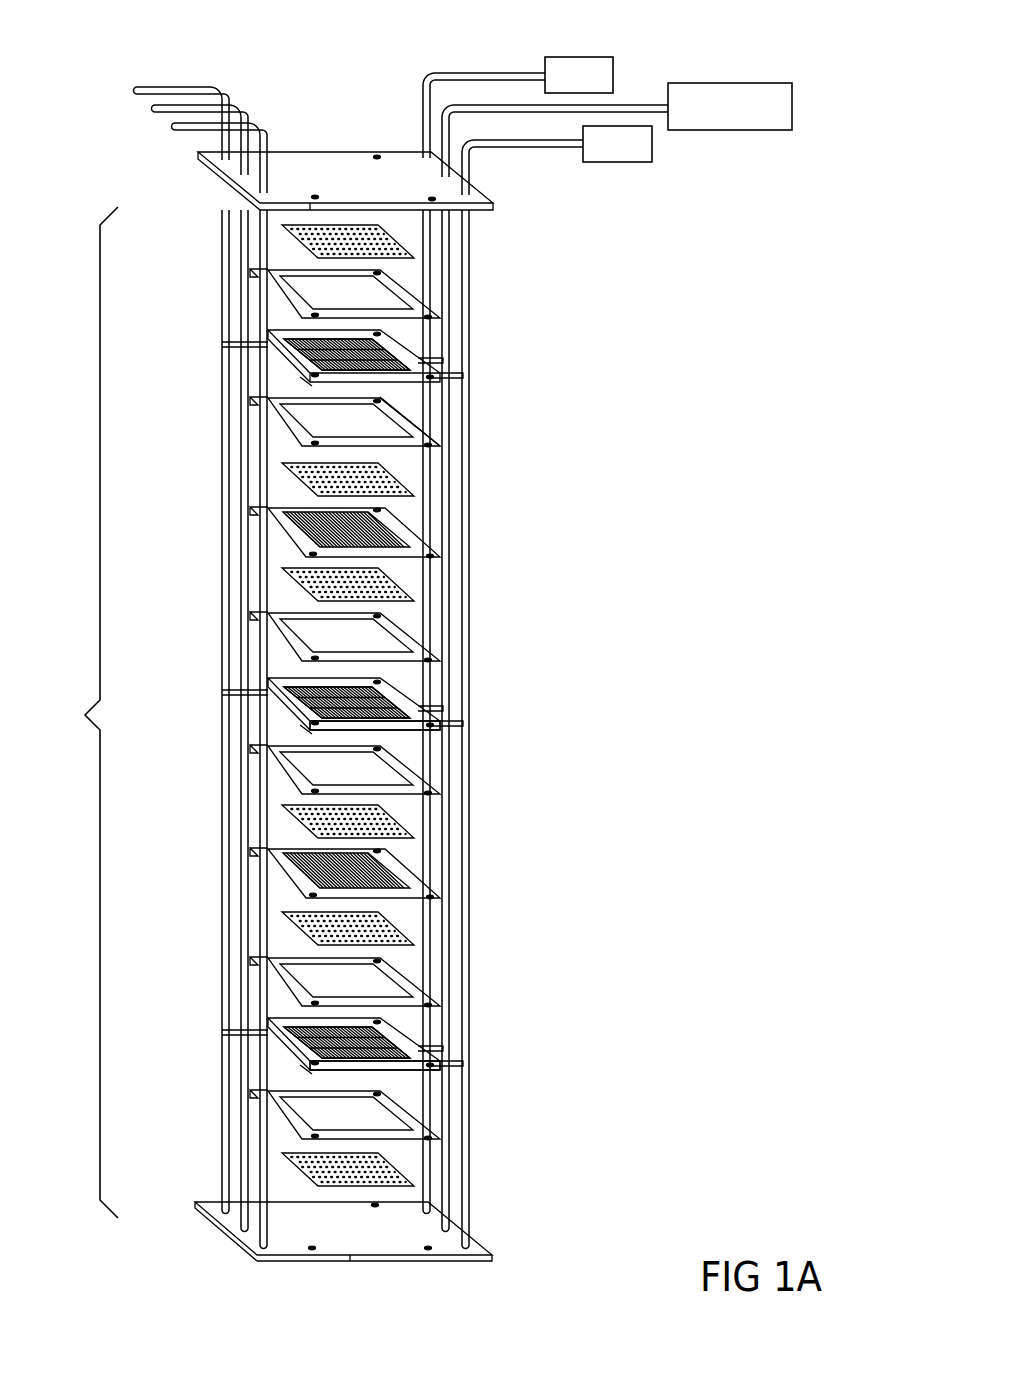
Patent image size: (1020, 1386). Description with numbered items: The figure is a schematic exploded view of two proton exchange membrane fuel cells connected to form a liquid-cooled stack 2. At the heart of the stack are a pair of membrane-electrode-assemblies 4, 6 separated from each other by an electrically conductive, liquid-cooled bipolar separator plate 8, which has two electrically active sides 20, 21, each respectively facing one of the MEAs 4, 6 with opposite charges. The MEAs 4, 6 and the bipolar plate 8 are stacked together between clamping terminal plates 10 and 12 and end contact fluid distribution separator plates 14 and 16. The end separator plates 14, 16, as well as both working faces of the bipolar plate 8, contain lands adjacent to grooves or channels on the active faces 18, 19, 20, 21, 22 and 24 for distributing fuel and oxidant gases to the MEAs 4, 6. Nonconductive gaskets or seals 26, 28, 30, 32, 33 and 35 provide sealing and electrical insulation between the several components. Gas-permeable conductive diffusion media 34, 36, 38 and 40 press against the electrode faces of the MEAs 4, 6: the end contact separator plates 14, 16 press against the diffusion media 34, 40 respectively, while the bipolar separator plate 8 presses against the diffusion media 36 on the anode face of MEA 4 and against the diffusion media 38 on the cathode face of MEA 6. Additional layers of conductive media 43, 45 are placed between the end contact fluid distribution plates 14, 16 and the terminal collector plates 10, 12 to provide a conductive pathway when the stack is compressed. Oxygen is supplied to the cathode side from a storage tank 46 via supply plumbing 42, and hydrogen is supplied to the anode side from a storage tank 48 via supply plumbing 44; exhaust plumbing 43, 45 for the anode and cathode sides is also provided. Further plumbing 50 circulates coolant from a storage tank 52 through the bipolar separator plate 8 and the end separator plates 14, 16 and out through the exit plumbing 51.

The fuel cell stack 2 is at (85, 712).
The membrane-electrode-assembly 4 is at (278, 534).
The membrane-electrode-assembly 6 is at (410, 867).
The bipolar separator plate 8 is at (292, 712).
The clamping terminal plate 10 is at (368, 188).
The clamping terminal plate 12 is at (380, 1243).
The end contact fluid distribution separator plate 14 is at (282, 362).
The end contact fluid distribution separator plate 16 is at (278, 1050).
The active face 18 is at (385, 343).
The active face 19 is at (410, 398).
The electrically active side 20 is at (290, 676).
The electrically active side 21 is at (300, 738).
The active face 22 is at (300, 1078).
The active face 24 is at (400, 1045).
The nonconductive gasket 26 is at (285, 422).
The nonconductive gasket 28 is at (285, 637).
The nonconductive gasket 30 is at (420, 775).
The nonconductive gasket 32 is at (285, 980).
The nonconductive gasket 33 is at (405, 1105).
The gas-permeable conductive diffusion media 34 is at (285, 475).
The nonconductive gasket 35 is at (282, 292).
The gas-permeable conductive diffusion media 36 is at (285, 580).
The gas-permeable conductive diffusion media 38 is at (290, 818).
The gas-permeable conductive diffusion media 40 is at (290, 920).
The oxygen supply plumbing 42 is at (427, 107).
The conductive media layer / exhaust plumbing 43 is at (192, 85).
The hydrogen supply plumbing 44 is at (472, 167).
The conductive media layer / exhaust plumbing 45 is at (263, 135).
The oxygen storage tank 46 is at (605, 57).
The hydrogen storage tank 48 is at (645, 162).
The coolant plumbing 50 is at (632, 104).
The coolant exit plumbing 51 is at (230, 105).
The coolant storage tank 52 is at (712, 85).